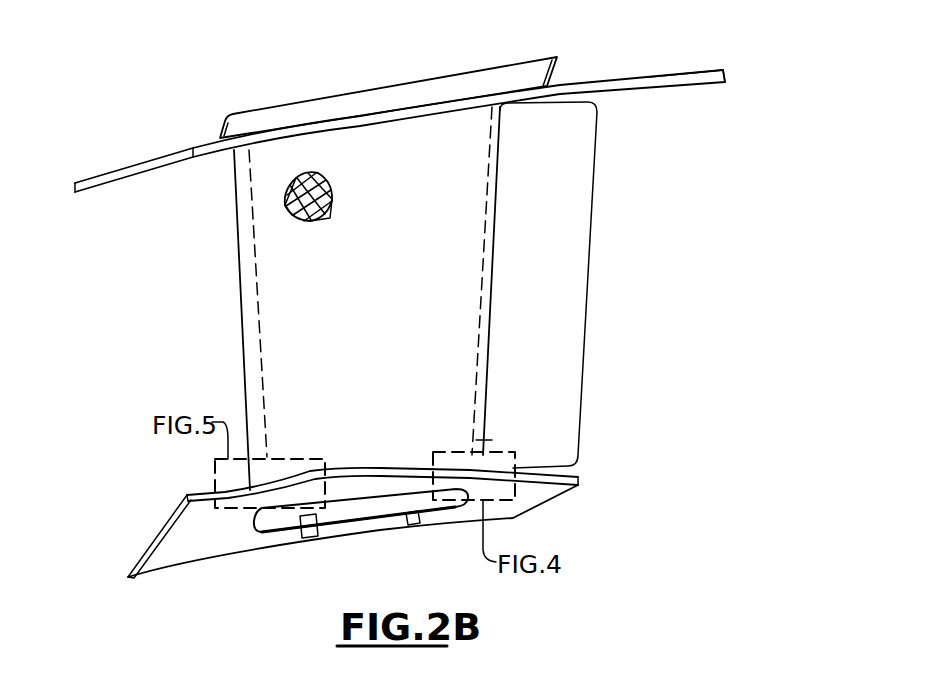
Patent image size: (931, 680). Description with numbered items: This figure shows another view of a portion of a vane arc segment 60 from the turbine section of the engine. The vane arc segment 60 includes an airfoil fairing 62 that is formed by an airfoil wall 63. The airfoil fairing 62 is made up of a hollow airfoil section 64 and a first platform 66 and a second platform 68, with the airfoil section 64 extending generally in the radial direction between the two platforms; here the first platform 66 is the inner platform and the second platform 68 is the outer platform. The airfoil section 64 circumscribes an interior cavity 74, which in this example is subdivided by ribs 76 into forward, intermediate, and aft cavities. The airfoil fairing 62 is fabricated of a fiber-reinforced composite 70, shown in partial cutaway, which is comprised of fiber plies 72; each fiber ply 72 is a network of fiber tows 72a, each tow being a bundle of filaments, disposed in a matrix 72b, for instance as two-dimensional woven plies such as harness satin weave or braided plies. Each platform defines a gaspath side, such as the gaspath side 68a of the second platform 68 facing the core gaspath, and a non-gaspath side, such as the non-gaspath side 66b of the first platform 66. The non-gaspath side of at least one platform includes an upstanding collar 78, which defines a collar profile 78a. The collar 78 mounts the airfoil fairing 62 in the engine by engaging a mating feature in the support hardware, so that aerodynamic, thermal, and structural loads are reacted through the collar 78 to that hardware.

The vane arc segment 60 is at (123, 444).
The airfoil fairing 62 is at (492, 438).
The airfoil wall 63 is at (262, 362).
The airfoil section 64 is at (588, 266).
The first platform 66 is at (580, 479).
The non-gaspath side 66b is at (533, 492).
The second platform 68 is at (643, 84).
The gaspath side 68a is at (703, 84).
The fiber-reinforced composite 70 is at (297, 179).
The fiber plies 72 is at (284, 224).
The fiber tows 72a is at (327, 217).
The matrix 72b is at (286, 206).
The interior cavity 74 is at (480, 336).
The ribs 76 is at (412, 501).
The collar 78 is at (553, 73).
The collar profile 78a is at (352, 503).